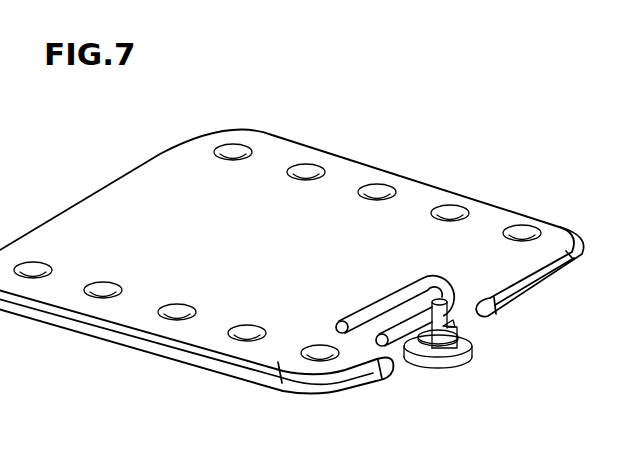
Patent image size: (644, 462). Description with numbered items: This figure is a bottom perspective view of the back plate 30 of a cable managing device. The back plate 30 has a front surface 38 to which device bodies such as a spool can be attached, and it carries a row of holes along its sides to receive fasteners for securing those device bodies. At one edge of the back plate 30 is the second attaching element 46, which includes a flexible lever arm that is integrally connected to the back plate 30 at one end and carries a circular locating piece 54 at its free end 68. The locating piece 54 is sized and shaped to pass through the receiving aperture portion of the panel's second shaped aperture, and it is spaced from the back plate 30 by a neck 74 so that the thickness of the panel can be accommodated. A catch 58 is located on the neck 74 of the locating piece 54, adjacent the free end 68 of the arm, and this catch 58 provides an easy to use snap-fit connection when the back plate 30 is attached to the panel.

The back plate 30 is at (106, 151).
The front surface 38 is at (257, 247).
The second attaching element 46 is at (477, 379).
The free end 68 is at (440, 298).
The catch 58 is at (452, 334).
The neck 74 is at (428, 341).
The locating piece 54 is at (443, 369).